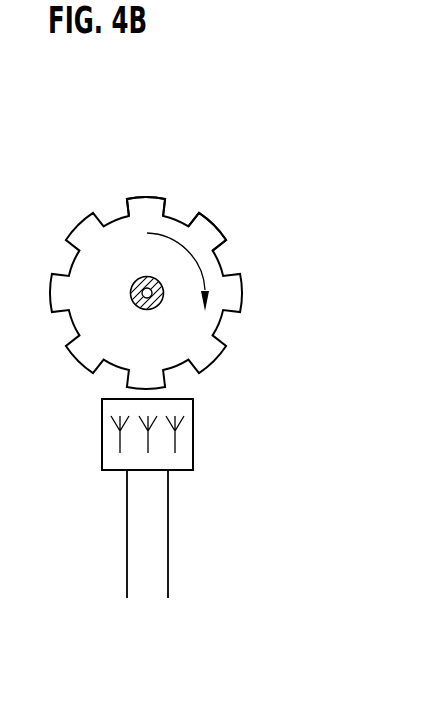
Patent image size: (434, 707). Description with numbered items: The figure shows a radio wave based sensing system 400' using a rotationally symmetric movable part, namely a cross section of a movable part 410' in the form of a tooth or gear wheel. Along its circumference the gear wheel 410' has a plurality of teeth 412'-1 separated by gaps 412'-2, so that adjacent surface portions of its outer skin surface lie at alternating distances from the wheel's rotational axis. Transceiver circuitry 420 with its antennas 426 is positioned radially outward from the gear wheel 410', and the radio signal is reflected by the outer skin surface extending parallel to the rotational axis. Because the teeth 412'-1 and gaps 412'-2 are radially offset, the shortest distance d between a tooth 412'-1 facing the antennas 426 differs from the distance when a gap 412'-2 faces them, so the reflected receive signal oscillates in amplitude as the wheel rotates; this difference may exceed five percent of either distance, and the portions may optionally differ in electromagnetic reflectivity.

The rotary encoder assembly 400' is at (208, 346).
The movable part 410' is at (208, 248).
The teeth 412'-1 is at (113, 161).
The gaps 412'-2 is at (254, 217).
The distance / gap between wheel and sensor d is at (202, 394).
The transceiver circuitry 420 is at (193, 447).
The antennas 426 is at (124, 462).